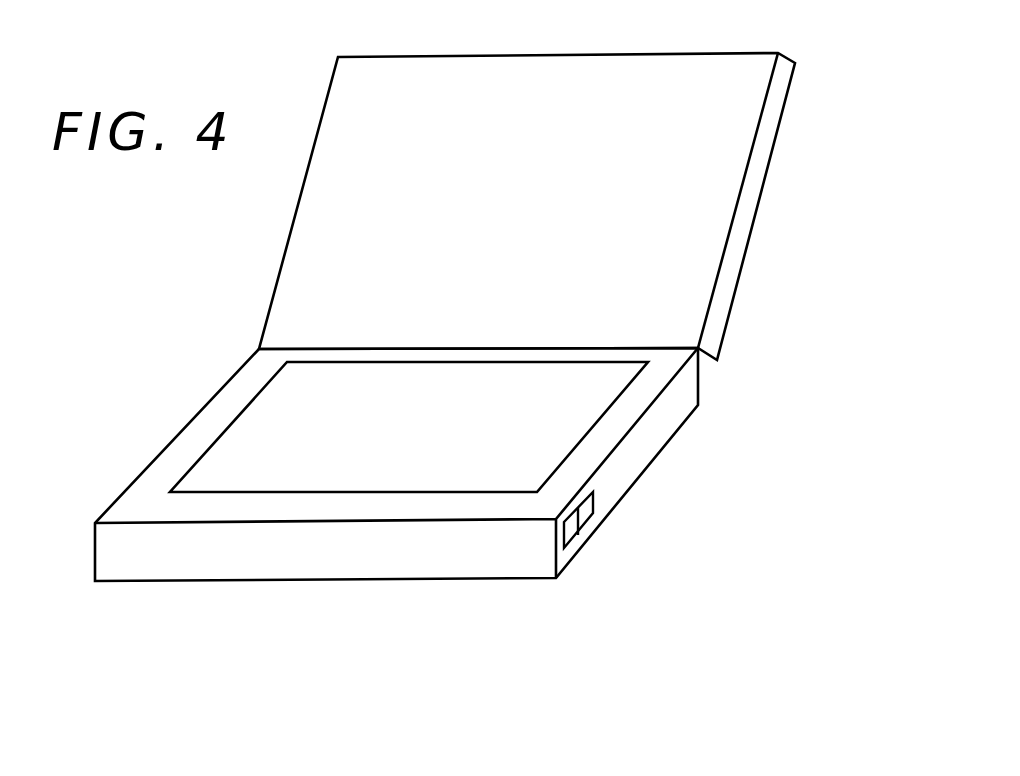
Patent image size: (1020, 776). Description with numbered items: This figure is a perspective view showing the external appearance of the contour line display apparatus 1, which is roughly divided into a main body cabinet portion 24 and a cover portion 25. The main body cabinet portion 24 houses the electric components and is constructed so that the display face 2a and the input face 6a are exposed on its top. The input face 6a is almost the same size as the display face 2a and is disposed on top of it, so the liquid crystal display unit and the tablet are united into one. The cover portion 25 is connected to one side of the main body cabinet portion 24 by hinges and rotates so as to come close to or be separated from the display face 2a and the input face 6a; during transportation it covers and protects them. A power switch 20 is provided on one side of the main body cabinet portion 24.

The contour line display apparatus 1 is at (634, 46).
The cover portion 25 is at (750, 195).
The main body cabinet portion 24 is at (653, 428).
The power switch 20 is at (598, 502).
The input face 6a is at (263, 420).
The display face 2a is at (232, 458).